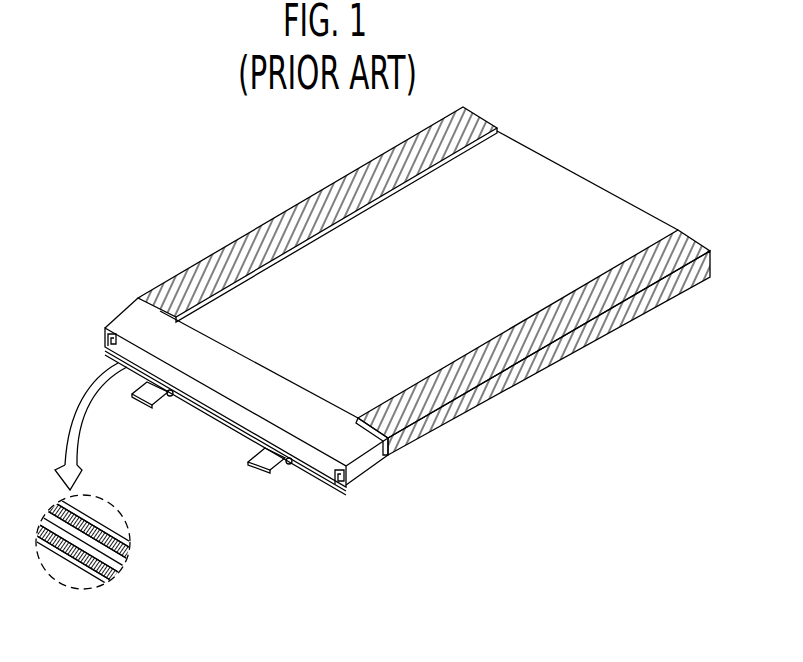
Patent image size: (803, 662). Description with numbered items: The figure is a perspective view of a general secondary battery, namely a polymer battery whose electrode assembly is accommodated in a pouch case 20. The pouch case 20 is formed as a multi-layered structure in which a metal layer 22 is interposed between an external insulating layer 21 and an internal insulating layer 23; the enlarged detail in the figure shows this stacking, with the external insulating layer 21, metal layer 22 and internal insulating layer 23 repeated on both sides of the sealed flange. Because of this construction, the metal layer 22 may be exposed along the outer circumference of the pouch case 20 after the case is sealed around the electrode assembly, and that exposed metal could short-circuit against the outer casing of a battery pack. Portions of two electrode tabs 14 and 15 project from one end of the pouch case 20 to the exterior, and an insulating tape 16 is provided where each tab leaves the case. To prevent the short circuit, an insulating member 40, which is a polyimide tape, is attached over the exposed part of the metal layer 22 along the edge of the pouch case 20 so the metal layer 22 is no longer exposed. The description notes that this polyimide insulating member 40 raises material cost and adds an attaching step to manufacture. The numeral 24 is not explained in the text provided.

The electrode tab 14 is at (133, 405).
The electrode tab 15 is at (250, 467).
The insulating tape 16 is at (172, 397).
The pouch case 20 is at (347, 263).
The external insulating layer 21 is at (130, 541).
The metal layer 22 is at (130, 549).
The internal insulating layer 23 is at (124, 560).
The pouch case 24 is at (563, 362).
The insulating member 40 is at (612, 295).